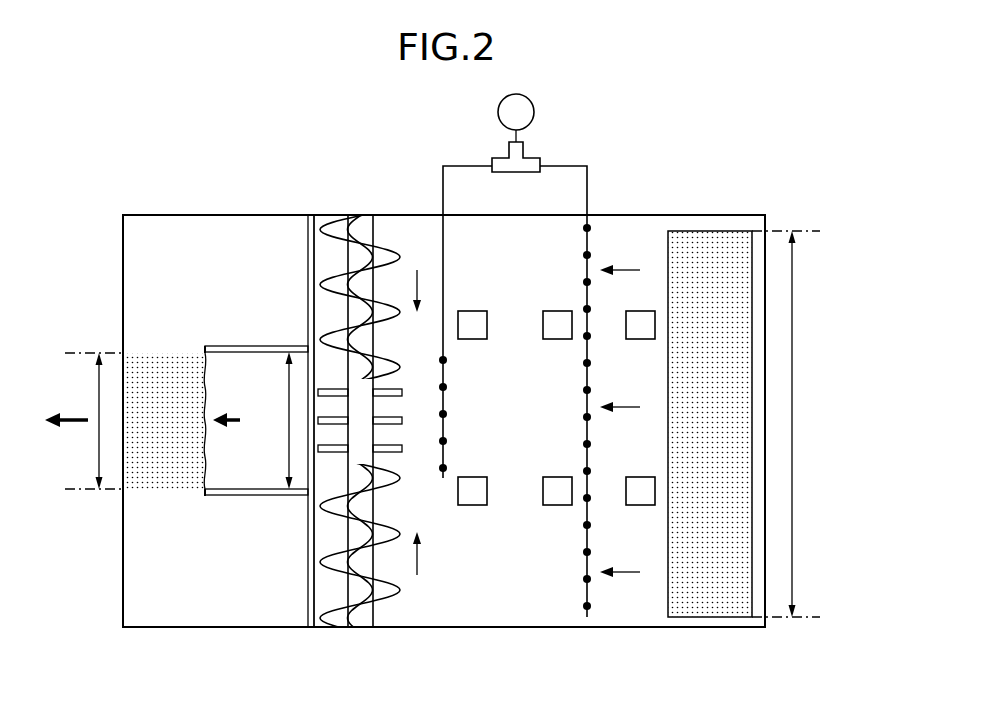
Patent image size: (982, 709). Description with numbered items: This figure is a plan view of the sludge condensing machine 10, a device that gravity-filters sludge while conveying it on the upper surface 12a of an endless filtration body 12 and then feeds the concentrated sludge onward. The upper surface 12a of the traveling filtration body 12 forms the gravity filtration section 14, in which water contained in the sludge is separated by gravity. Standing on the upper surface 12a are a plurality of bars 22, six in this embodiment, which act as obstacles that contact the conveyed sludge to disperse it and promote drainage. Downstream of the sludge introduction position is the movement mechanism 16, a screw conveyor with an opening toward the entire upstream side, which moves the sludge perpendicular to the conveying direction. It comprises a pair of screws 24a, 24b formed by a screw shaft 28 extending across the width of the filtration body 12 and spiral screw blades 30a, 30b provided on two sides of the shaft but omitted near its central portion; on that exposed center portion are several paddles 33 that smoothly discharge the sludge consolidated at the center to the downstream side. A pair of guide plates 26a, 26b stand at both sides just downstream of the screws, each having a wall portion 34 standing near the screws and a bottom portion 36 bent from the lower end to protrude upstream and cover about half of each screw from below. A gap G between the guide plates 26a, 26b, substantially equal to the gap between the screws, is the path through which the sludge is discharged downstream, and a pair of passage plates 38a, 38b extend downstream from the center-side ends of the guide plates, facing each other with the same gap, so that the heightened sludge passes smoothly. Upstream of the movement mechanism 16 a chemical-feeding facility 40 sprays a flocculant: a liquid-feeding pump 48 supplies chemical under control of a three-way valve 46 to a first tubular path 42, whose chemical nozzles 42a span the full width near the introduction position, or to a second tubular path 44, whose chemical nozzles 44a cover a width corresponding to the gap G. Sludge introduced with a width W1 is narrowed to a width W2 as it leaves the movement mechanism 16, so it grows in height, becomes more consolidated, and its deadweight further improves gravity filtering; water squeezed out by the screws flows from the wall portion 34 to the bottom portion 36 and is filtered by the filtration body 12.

The sludge condensing machine 10 is at (92, 173).
The filtration body 12 is at (658, 212).
The upper surface of filtration body 12a is at (563, 628).
The gravity filtration section 14 is at (508, 640).
The movement mechanism 16 is at (411, 432).
The bars 22 is at (556, 311).
The screw 24a is at (410, 620).
The screw 24b is at (447, 254).
The guide plate 26a is at (310, 518).
The guide plate 26b is at (310, 322).
The screw shaft 28 is at (378, 508).
The screw blade 30a is at (382, 589).
The screw blade 30b is at (388, 256).
The paddles 33 is at (402, 448).
The wall portion 34 is at (311, 272).
The bottom portion 36 is at (325, 249).
The passage plate 38a is at (218, 495).
The passage plate 38b is at (208, 347).
The chemical-feeding facility 40 is at (520, 355).
The first tubular path 42 is at (551, 391).
The chemical nozzles 42a is at (583, 363).
The second tubular path 44 is at (480, 322).
The chemical nozzles 44a is at (447, 360).
The three-way valve 46 is at (497, 164).
The liquid-feeding pump 48 is at (498, 117).
The gap G is at (281, 420).
The width W1 is at (812, 424).
The width W2 is at (80, 421).